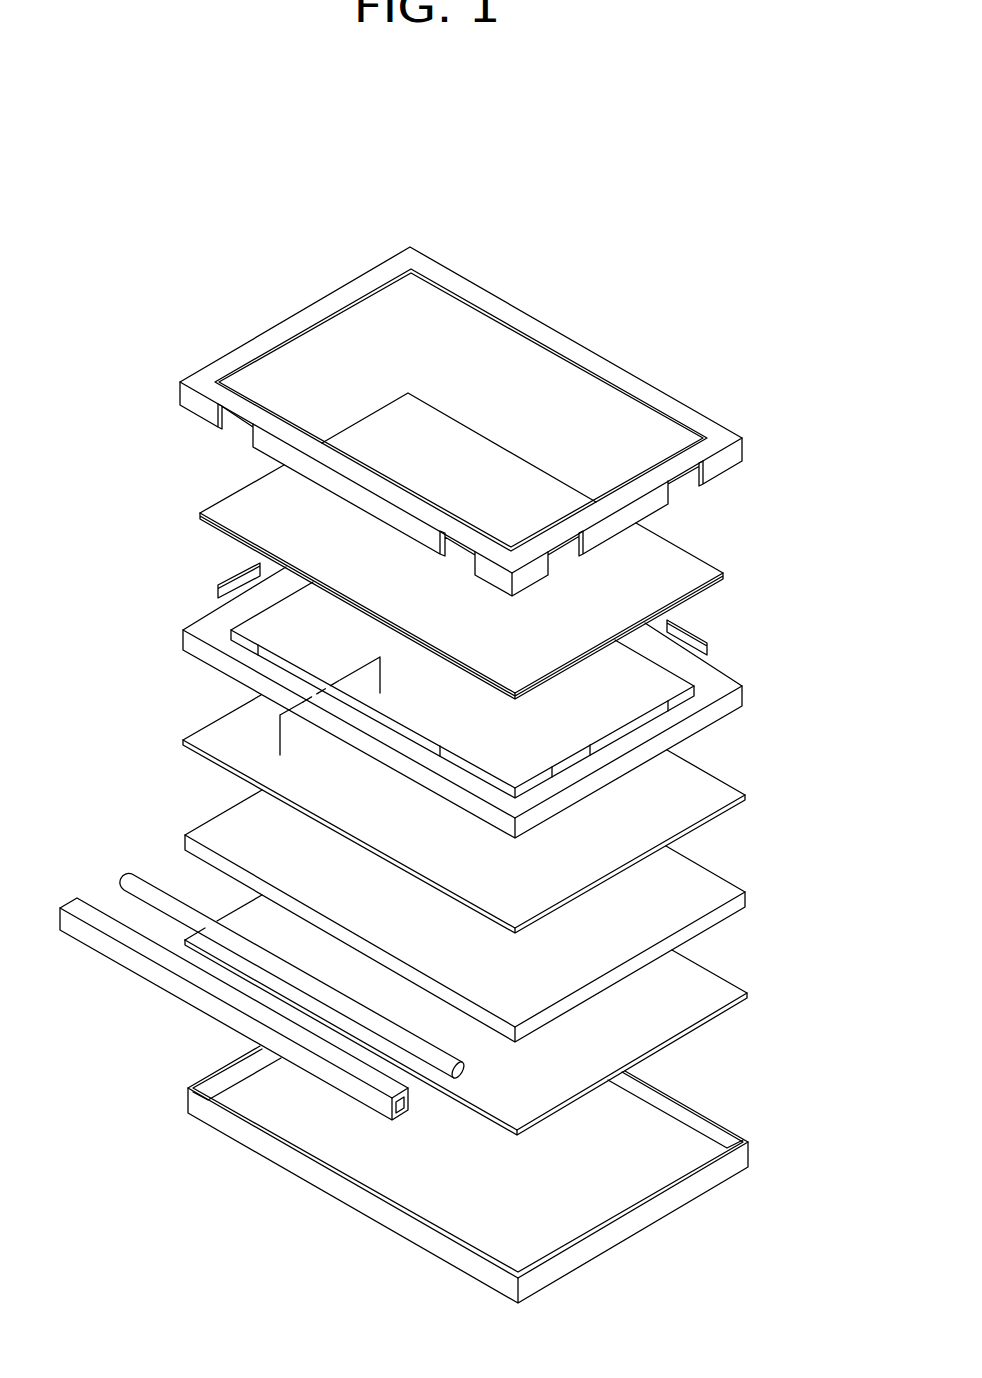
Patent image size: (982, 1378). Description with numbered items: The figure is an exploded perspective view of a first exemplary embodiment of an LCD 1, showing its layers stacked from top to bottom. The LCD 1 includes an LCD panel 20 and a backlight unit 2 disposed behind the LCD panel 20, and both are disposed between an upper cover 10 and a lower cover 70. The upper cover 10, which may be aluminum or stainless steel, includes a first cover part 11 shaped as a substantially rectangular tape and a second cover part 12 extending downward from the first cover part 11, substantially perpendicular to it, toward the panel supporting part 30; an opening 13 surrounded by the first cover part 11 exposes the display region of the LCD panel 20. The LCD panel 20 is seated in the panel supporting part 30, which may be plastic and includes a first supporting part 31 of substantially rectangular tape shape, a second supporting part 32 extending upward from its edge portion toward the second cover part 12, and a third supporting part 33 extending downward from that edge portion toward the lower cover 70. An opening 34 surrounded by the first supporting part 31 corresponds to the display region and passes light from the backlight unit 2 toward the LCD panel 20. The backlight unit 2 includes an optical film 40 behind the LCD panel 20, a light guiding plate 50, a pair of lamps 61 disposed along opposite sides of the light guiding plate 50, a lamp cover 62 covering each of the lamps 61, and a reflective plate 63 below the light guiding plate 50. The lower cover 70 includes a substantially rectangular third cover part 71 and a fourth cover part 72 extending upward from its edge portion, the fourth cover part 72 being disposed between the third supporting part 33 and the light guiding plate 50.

The LCD 1 is at (185, 253).
The backlight unit 2 is at (832, 794).
The upper cover 10 is at (563, 333).
The first cover part 11 is at (647, 393).
The second cover part 12 is at (745, 447).
The opening 13 is at (455, 315).
The LCD panel 20 is at (725, 572).
The panel supporting part 30 is at (744, 695).
The first supporting part 31 is at (190, 625).
The second supporting part 32 is at (242, 652).
The third supporting part 33 is at (240, 702).
The opening 34 is at (232, 612).
The optical film 40 is at (747, 793).
The light guiding plate 50 is at (747, 900).
The lamps 61 is at (173, 913).
The lamp cover 62 is at (87, 940).
The reflective plate 63 is at (749, 995).
The lower cover 70 is at (745, 1155).
The third cover part 71 is at (607, 1202).
The fourth cover part 72 is at (703, 1117).